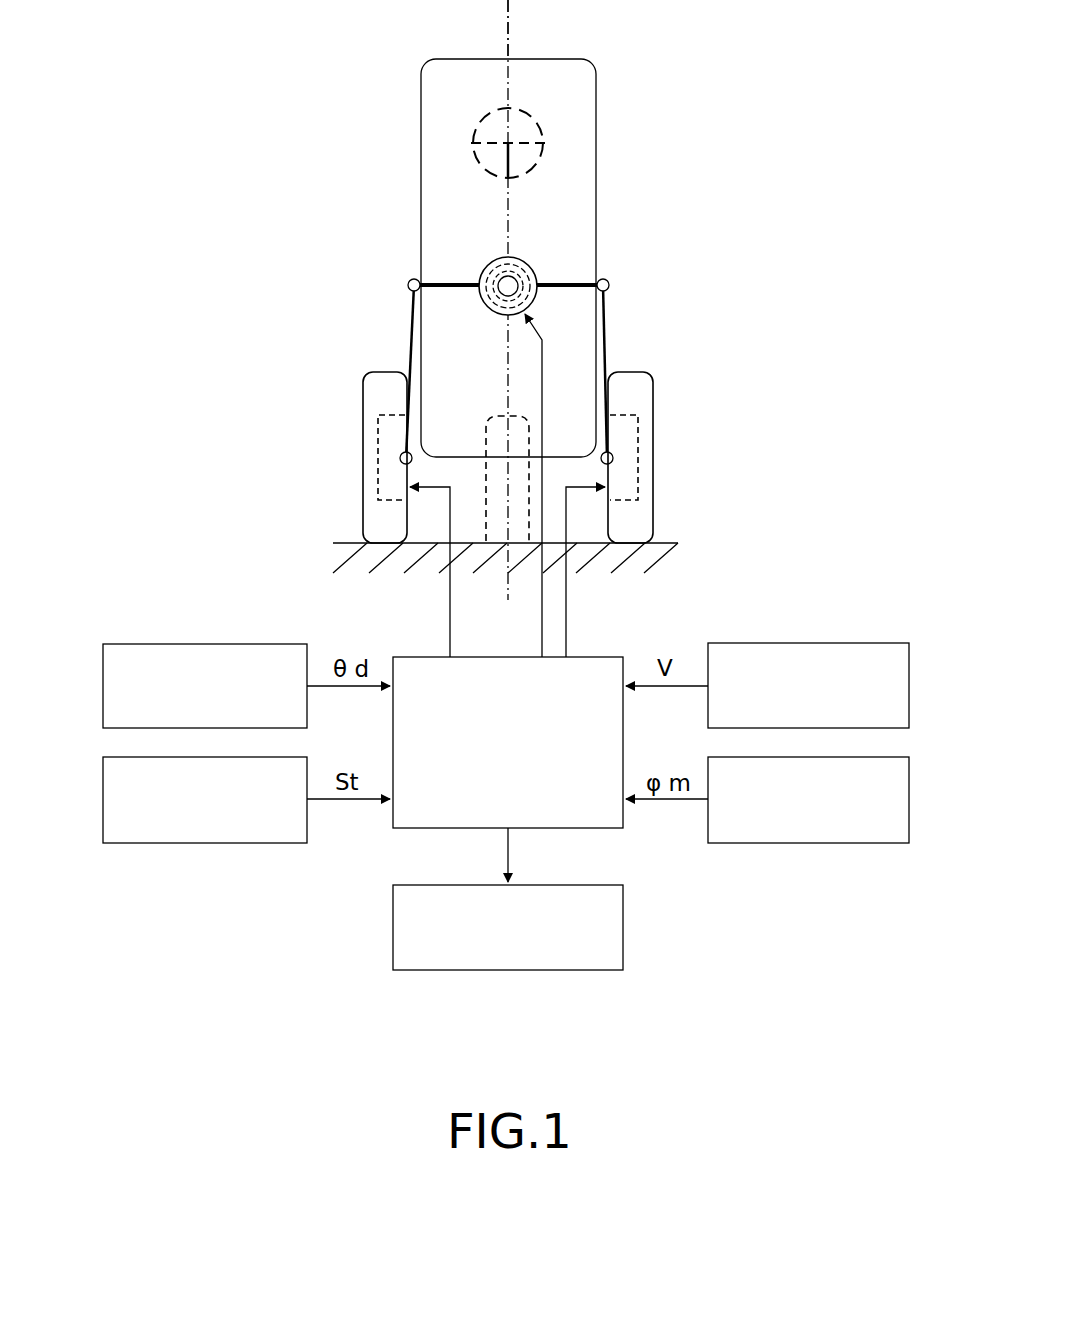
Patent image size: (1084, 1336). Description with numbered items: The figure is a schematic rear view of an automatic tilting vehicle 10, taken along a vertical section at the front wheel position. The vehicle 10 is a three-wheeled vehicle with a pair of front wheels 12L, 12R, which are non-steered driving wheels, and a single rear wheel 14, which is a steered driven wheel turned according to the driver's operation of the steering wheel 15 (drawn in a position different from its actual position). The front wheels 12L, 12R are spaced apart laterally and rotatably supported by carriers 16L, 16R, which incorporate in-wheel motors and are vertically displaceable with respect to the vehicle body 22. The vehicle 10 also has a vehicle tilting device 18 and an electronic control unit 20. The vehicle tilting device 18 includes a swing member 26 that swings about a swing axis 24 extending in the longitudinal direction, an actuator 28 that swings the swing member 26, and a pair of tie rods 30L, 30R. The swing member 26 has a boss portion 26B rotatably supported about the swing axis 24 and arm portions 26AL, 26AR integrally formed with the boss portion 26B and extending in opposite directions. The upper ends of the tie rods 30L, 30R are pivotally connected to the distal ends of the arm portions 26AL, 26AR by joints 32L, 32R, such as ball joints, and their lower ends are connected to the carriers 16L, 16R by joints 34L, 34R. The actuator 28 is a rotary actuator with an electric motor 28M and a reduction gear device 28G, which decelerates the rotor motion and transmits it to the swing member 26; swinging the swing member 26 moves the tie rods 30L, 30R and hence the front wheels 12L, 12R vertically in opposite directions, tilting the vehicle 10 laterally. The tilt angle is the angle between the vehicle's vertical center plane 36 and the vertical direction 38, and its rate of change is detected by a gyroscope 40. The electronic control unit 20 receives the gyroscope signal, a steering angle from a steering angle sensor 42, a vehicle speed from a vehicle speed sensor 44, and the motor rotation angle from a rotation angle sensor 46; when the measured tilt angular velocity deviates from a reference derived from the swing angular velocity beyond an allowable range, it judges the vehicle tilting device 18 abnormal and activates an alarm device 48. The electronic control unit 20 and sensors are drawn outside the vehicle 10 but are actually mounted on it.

The automatic tilting vehicle 10 is at (402, 80).
The left front wheel 12L is at (337, 457).
The right front wheel 12R is at (678, 457).
The rear wheel 14 is at (521, 415).
The steering wheel 15 is at (524, 110).
The left carrier 16L is at (378, 432).
The right carrier 16R is at (638, 433).
The vehicle tilting device 18 is at (417, 260).
The electronic control unit 20 is at (508, 742).
The vehicle body 22 is at (597, 160).
The swing axis 24 is at (498, 261).
The swing member 26 is at (586, 277).
The left arm portion 26AL is at (470, 284).
The right arm portion 26AR is at (552, 284).
The boss portion 26B is at (519, 261).
The actuator 28 is at (506, 460).
The electric motor 28M is at (492, 299).
The reduction gear device 28G is at (500, 296).
The left tie rod 30L is at (411, 336).
The right tie rod 30R is at (606, 336).
The left upper joint 32L is at (408, 285).
The right upper joint 32R is at (609, 285).
The left lower joint 34L is at (412, 459).
The right lower joint 34R is at (602, 459).
The center plane 36 is at (508, 30).
The vertical direction 38 is at (508, 30).
The gyroscope 40 is at (205, 644).
The steering angle sensor 42 is at (205, 843).
The vehicle speed sensor 44 is at (808, 643).
The rotation angle sensor 46 is at (808, 843).
The alarm device 48 is at (508, 970).